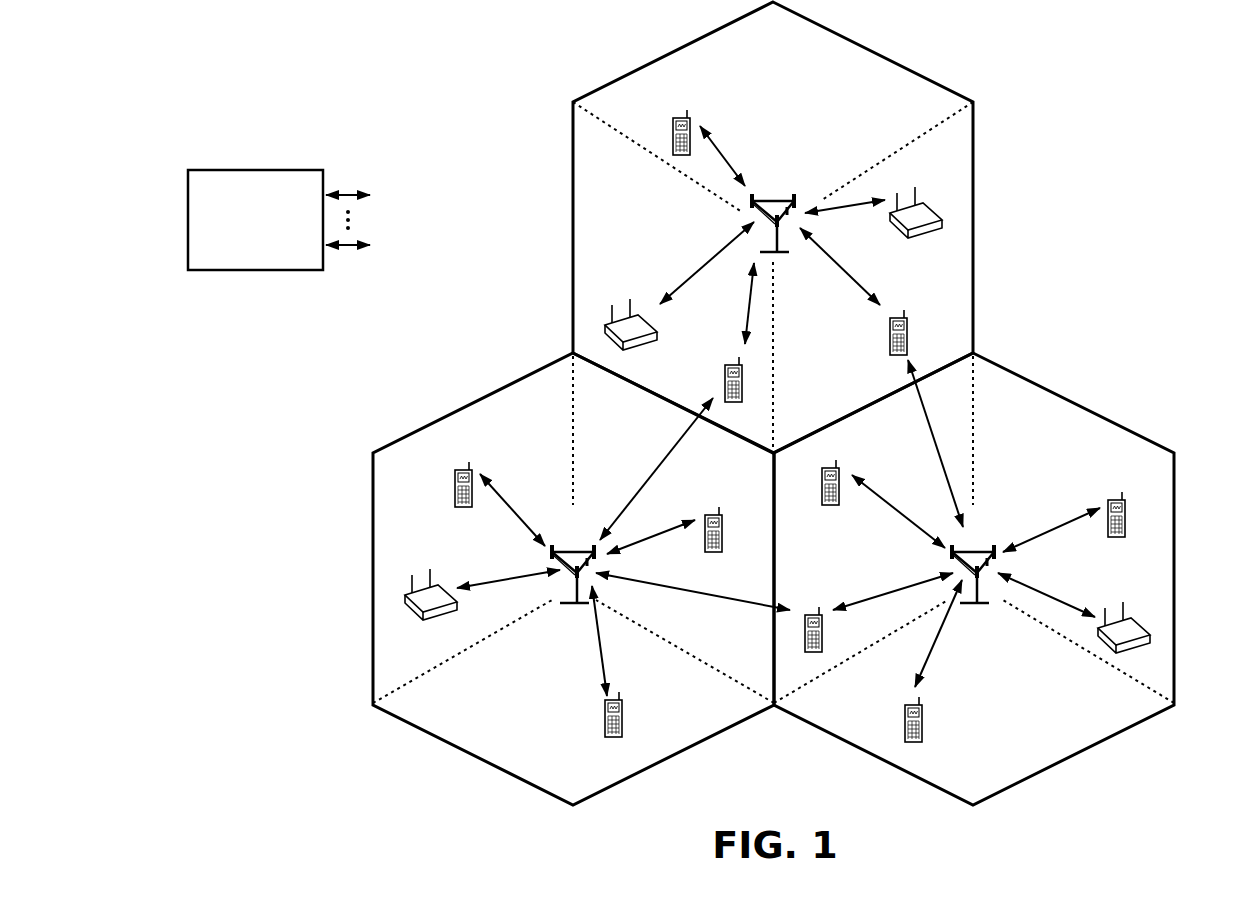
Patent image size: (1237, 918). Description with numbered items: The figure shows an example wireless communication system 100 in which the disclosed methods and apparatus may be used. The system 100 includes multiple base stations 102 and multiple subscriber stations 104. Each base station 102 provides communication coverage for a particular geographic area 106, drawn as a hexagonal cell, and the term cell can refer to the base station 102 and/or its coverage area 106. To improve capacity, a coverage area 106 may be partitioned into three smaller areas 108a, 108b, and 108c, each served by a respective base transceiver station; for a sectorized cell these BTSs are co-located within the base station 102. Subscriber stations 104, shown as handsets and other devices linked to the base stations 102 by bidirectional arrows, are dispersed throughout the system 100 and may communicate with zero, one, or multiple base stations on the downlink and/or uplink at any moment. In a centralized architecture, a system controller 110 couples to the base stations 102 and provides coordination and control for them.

The wireless communication system 100 is at (1113, 67).
The base station 102 is at (771, 198).
The subscriber station 104 is at (672, 126).
The coverage area 106 is at (872, 48).
The smaller area 108a is at (776, 48).
The smaller area 108b is at (609, 191).
The smaller area 108c is at (843, 380).
The system controller 110 is at (252, 166).